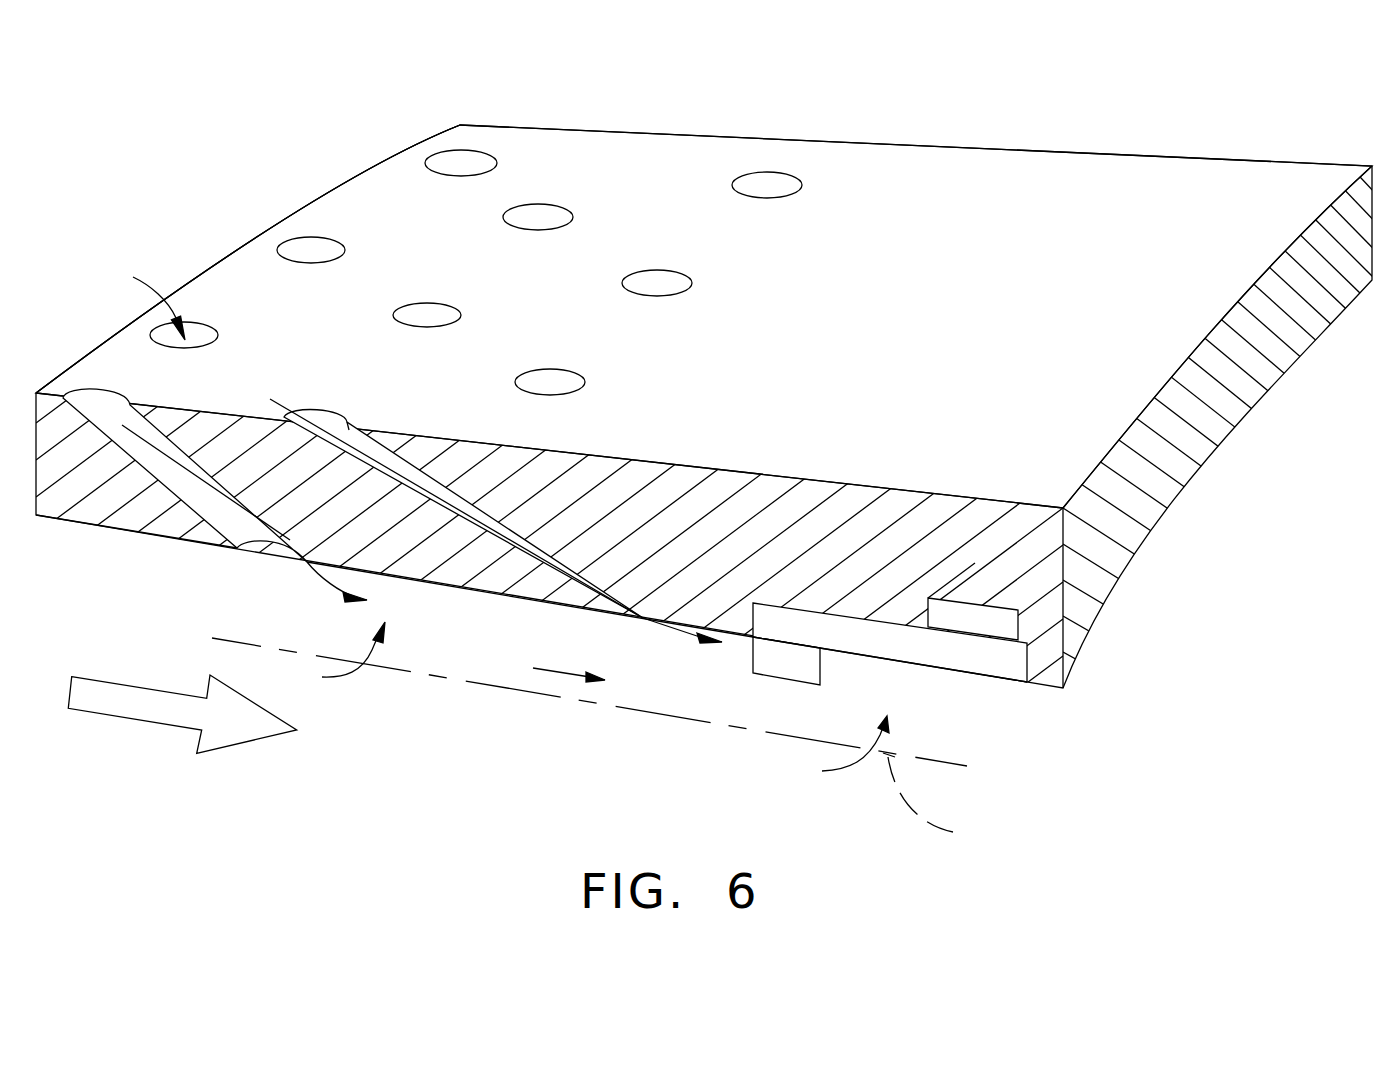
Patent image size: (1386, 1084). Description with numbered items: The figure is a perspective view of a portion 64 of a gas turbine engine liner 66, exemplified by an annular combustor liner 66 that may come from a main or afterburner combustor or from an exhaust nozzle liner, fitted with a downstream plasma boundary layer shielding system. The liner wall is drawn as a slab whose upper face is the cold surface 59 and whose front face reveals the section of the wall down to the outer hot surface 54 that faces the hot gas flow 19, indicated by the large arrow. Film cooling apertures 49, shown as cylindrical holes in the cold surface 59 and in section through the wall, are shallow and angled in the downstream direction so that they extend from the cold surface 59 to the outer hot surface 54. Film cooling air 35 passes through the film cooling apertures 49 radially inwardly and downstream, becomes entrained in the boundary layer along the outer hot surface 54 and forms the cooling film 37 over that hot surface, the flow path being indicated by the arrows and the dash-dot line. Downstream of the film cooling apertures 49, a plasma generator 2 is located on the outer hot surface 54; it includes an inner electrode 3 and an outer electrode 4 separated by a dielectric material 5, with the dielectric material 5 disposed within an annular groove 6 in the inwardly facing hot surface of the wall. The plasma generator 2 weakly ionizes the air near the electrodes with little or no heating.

The plasma generator 2 is at (589, 712).
The inner electrode 3 is at (987, 603).
The outer electrode 4 is at (788, 680).
The dielectric material 5 is at (1000, 682).
The annular groove 6 is at (793, 605).
The hot gas flow 19 is at (108, 715).
The film cooling air 35 is at (160, 298).
The cooling film 37 is at (638, 736).
The film cooling apertures 49 is at (466, 150).
The outer hot surface 54 is at (433, 584).
The cold surface 59 is at (650, 208).
The portion of gas turbine engine liner 64 is at (392, 183).
The gas turbine engine liner 66 is at (295, 212).